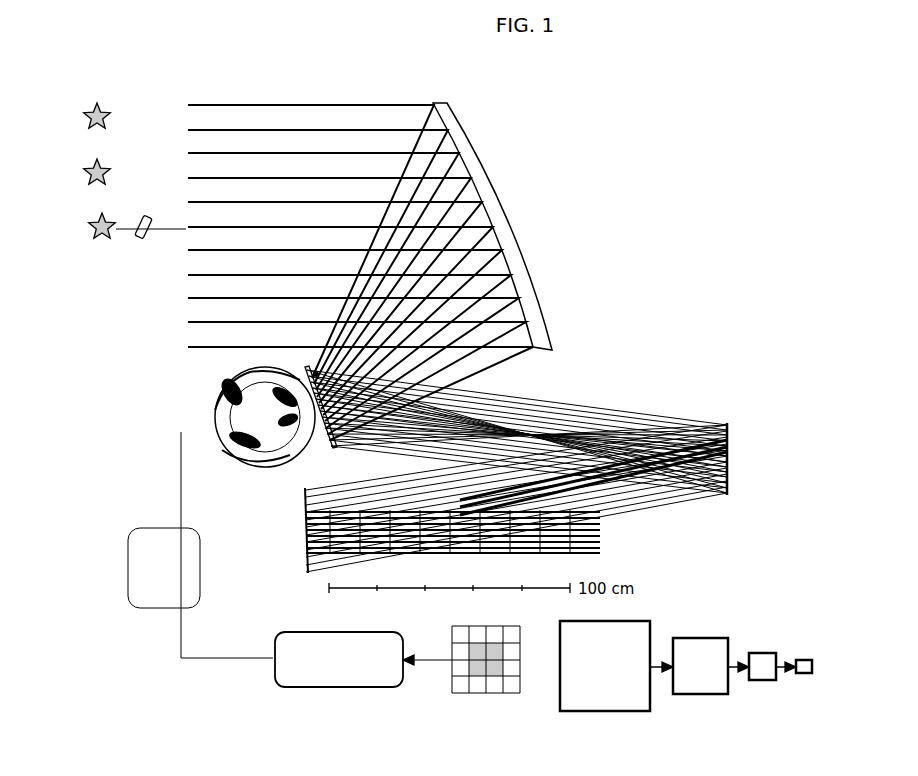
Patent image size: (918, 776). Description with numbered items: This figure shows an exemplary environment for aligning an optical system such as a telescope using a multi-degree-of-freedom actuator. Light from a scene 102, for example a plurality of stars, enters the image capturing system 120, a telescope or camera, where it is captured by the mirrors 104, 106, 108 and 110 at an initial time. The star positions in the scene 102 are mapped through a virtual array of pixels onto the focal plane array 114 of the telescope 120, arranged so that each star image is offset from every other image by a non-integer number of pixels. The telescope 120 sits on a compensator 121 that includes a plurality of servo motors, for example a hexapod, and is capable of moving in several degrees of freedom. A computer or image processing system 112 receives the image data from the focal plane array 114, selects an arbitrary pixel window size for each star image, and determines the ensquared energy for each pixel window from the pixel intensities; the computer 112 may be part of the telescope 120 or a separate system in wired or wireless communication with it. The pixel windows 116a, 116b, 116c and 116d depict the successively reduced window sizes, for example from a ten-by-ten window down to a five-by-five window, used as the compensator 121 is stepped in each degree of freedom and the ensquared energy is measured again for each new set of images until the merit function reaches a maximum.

The scene 102 is at (103, 171).
The mirror 104 is at (375, 271).
The mirror 106 is at (516, 429).
The mirror 108 is at (550, 497).
The mirror 110 is at (430, 530).
The computer or image processing system 112 is at (339, 678).
The focal plane array 114 is at (461, 668).
The pixel window 116a is at (616, 684).
The first reduced pixel window 116b is at (710, 689).
The second reduced pixel window 116c is at (772, 697).
The third reduced pixel window 116d is at (836, 666).
The image capturing system 120 is at (298, 362).
The compensator 121 is at (208, 432).